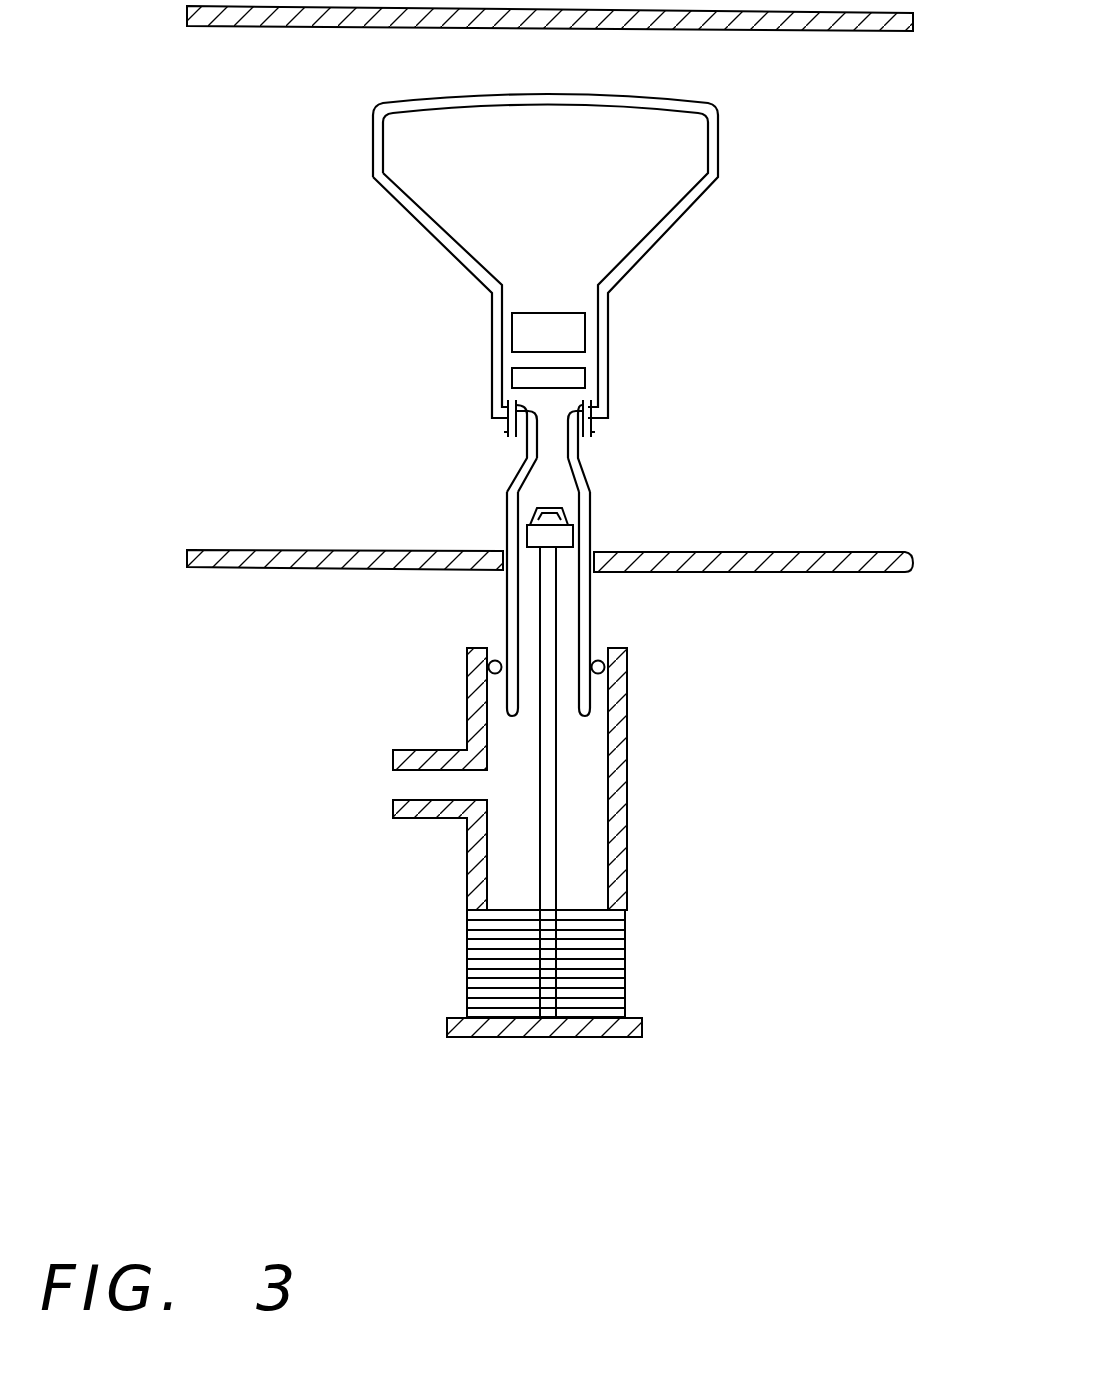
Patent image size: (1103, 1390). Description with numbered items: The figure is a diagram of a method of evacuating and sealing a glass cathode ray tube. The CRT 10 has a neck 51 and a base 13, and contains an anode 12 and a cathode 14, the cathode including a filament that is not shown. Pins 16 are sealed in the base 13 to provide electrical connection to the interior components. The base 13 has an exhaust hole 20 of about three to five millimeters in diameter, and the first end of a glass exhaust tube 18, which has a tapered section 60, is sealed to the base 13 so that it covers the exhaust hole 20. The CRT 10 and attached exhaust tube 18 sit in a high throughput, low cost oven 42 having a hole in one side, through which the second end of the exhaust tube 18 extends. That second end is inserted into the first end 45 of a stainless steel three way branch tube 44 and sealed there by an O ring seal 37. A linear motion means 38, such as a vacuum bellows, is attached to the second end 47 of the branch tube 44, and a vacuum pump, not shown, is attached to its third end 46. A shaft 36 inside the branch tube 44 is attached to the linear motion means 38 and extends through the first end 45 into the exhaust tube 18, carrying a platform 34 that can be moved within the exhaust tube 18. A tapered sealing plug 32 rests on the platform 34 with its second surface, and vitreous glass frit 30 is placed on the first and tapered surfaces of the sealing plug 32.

The CRT 10 is at (663, 118).
The anode 12 is at (567, 331).
The base 13 is at (608, 418).
The cathode 14 is at (568, 381).
The pins 16 is at (508, 436).
The exhaust tube 18 is at (593, 627).
The exhaust hole 20 is at (550, 407).
The vitreous glass frit 30 is at (530, 520).
The tapered sealing plug 32 is at (568, 518).
The platform 34 is at (560, 536).
The shaft 36 is at (547, 735).
The O ring seal 37 is at (605, 667).
The linear motion means 38 is at (625, 945).
The oven 42 is at (860, 22).
The three way branch tube 44 is at (617, 790).
The first end of branch tube 45 is at (470, 650).
The third end of branch tube 46 is at (393, 806).
The second end of branch tube 47 is at (645, 1032).
The neck 51 is at (490, 327).
The tapered section 60 is at (515, 470).